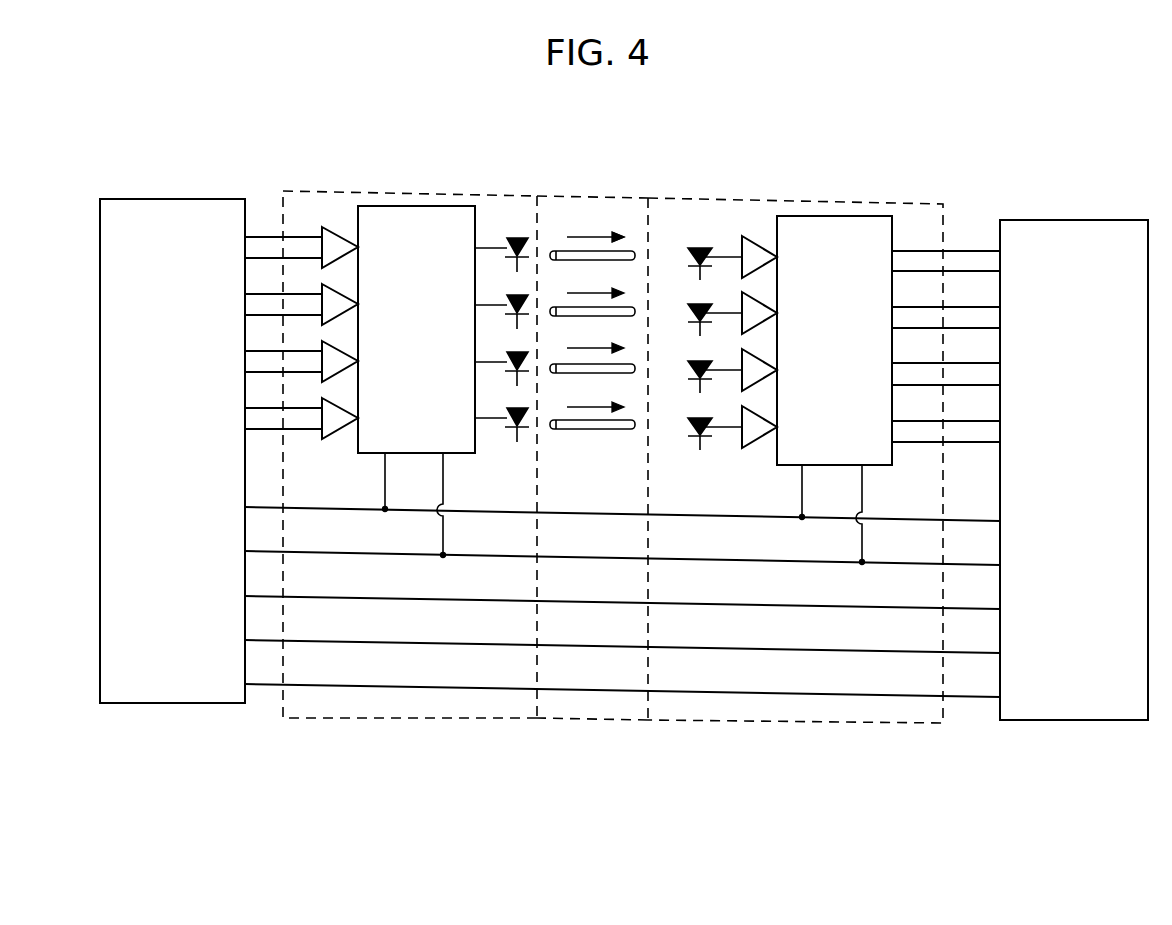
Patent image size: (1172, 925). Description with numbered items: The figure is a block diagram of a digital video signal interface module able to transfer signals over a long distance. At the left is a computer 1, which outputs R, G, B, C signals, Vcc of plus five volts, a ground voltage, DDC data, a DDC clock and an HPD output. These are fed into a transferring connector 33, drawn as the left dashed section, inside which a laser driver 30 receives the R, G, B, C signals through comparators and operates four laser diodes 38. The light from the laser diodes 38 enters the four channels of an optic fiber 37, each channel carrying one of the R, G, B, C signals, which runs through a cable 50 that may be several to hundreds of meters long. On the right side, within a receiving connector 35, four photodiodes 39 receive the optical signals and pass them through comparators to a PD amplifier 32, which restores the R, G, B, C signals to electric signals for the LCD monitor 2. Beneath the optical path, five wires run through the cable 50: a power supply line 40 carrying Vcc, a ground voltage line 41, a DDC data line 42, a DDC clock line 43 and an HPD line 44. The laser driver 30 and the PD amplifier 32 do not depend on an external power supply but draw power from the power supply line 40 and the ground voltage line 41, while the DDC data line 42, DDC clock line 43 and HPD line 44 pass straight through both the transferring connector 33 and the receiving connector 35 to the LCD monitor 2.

The computer 1 is at (137, 693).
The LCD monitor 2 is at (1043, 707).
The laser driver 30 is at (417, 220).
The PD amplifier 32 is at (841, 232).
The transferring connector 33 is at (335, 718).
The receiving connector 35 is at (890, 723).
The optic fiber 37 is at (562, 252).
The laser diode 38 is at (510, 232).
The photodiode 39 is at (699, 248).
The power supply line 40 is at (347, 508).
The ground voltage line 41 is at (407, 553).
The DDC data line 42 is at (618, 603).
The DDC clock line 43 is at (687, 650).
The HPD line 44 is at (758, 693).
The cable 50 is at (592, 723).